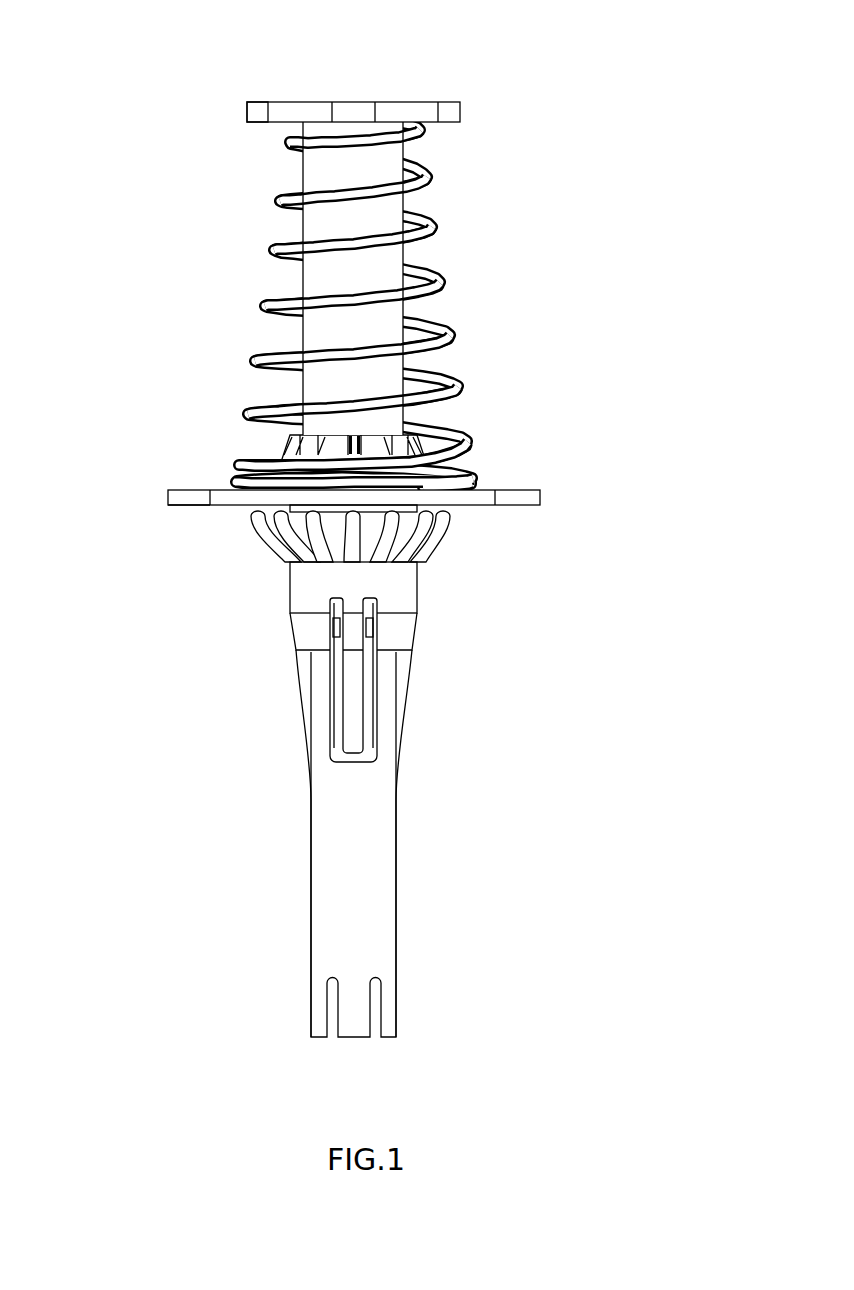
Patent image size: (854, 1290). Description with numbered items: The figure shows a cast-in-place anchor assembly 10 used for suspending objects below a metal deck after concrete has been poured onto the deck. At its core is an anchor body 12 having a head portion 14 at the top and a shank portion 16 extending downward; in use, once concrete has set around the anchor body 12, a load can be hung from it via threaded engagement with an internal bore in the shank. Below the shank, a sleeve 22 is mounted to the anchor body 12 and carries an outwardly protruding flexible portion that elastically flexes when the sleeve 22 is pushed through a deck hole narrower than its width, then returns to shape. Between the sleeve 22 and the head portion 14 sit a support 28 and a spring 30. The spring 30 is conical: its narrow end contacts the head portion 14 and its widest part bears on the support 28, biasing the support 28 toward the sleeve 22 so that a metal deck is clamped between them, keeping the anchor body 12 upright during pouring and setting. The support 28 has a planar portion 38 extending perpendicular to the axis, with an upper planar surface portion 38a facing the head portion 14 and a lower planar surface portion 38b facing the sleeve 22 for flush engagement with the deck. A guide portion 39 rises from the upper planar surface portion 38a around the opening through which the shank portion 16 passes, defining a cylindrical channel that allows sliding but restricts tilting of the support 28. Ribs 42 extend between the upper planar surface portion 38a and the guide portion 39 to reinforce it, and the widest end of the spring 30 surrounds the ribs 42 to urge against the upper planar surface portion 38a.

The cast-in-place anchor assembly 10 is at (580, 95).
The anchor body 12 is at (410, 110).
The head portion 14 is at (256, 101).
The shank portion 16 is at (335, 218).
The sleeve 22 is at (352, 843).
The support 28 is at (482, 498).
The spring 30 is at (423, 225).
The planar portion 38 is at (540, 497).
The upper planar surface portion 38a is at (185, 490).
The lower planar surface portion 38b is at (198, 505).
The guide portion 39 is at (338, 445).
The ribs 42 is at (285, 445).